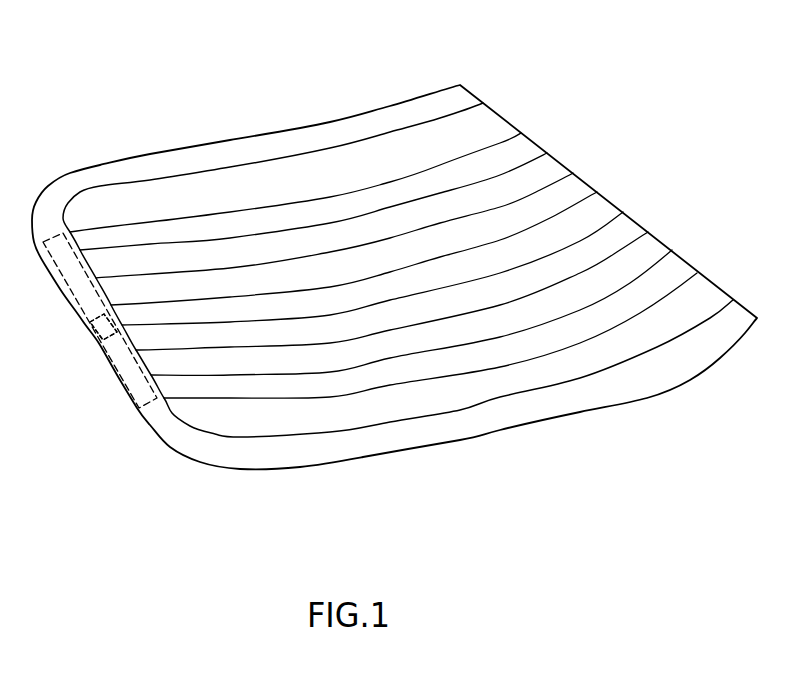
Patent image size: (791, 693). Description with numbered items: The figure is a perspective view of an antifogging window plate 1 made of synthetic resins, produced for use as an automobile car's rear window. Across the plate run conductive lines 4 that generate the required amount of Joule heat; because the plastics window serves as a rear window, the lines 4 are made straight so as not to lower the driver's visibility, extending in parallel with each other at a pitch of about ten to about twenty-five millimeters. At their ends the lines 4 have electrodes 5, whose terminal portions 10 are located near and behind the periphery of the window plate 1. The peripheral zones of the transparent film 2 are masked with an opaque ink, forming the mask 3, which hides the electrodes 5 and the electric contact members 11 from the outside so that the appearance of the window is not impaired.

The window plate 1 is at (521, 117).
The transparent film 2 is at (430, 98).
The mask 3 is at (145, 163).
The conductive lines 4 is at (300, 230).
The electrodes 5 is at (123, 388).
The terminal portions 10 is at (90, 335).
The electric contact members 11 is at (73, 440).